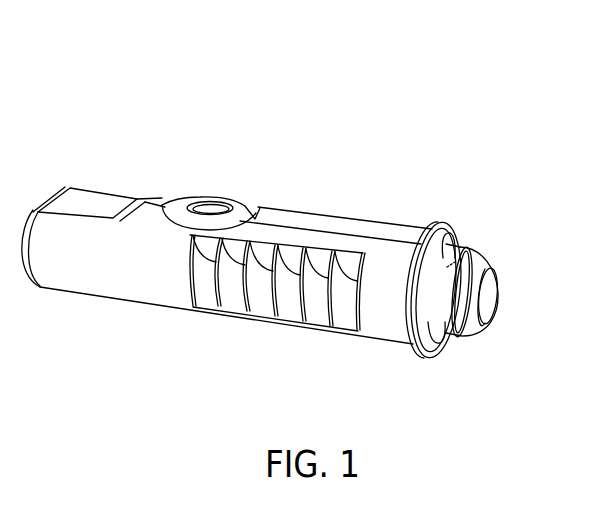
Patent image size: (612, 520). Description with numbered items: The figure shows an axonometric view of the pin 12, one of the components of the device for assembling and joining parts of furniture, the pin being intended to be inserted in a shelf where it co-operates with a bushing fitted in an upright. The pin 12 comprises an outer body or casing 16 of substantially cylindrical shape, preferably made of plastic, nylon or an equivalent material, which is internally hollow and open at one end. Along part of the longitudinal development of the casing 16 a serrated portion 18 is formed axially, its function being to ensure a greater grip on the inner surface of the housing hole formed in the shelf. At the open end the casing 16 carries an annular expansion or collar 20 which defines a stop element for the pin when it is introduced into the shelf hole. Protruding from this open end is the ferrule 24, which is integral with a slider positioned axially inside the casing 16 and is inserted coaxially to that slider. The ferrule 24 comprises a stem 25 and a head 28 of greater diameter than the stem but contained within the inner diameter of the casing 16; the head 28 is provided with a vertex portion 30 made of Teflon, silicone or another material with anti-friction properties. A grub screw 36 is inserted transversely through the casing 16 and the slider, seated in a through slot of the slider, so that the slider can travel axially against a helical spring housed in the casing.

The pin 12 is at (336, 162).
The outer body or casing 16 is at (123, 270).
The serrated portion 18 is at (258, 287).
The annular expansion or collar 20 is at (447, 219).
The ferrule 24 is at (480, 340).
The stem 25 is at (447, 267).
The head 28 is at (470, 279).
The vertex portion 30 is at (489, 302).
The grub screw 36 is at (210, 188).